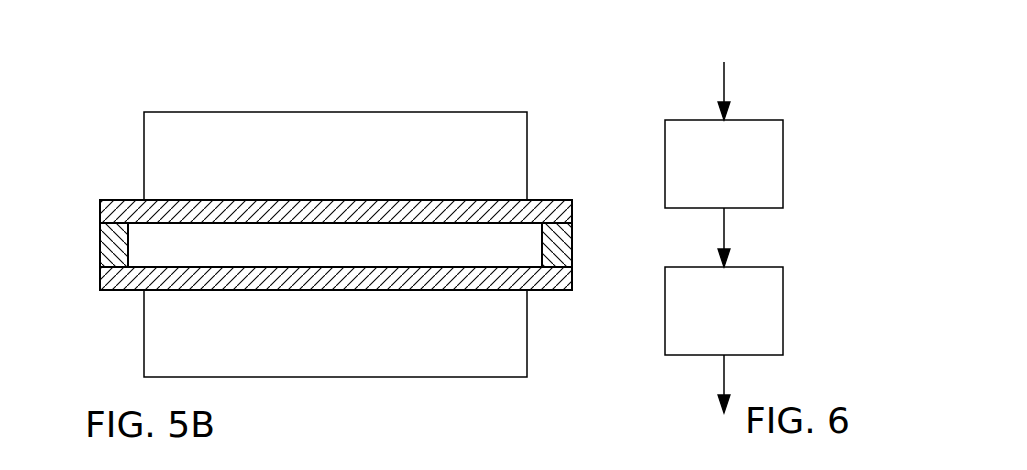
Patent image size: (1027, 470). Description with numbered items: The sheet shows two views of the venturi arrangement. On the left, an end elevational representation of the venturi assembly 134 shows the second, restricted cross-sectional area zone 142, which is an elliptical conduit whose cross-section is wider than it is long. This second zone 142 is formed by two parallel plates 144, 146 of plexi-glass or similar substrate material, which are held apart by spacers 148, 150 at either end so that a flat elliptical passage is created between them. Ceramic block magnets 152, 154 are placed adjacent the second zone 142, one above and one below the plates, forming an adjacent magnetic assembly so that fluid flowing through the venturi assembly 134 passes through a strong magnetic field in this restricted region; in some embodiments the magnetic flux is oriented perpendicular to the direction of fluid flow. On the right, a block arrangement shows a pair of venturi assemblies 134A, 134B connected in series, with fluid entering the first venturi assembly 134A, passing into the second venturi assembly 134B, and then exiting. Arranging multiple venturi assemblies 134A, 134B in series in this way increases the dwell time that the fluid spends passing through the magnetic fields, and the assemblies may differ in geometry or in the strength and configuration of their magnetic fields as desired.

In FIG. 5B, the venturi assembly 134 is at (330, 238).
In FIG. 5B, the second restricted cross-sectional area zone 142 is at (205, 248).
In FIG. 5B, the parallel plate 144 is at (335, 207).
In FIG. 5B, the parallel plate 146 is at (332, 282).
In FIG. 5B, the spacer 148 is at (117, 252).
In FIG. 5B, the spacer 150 is at (557, 256).
In FIG. 5B, the ceramic block magnet 152 is at (401, 118).
In FIG. 5B, the ceramic block magnet 154 is at (430, 367).
In FIG. 6, the venturi assembly 134A is at (783, 165).
In FIG. 6, the venturi assembly 134B is at (783, 312).